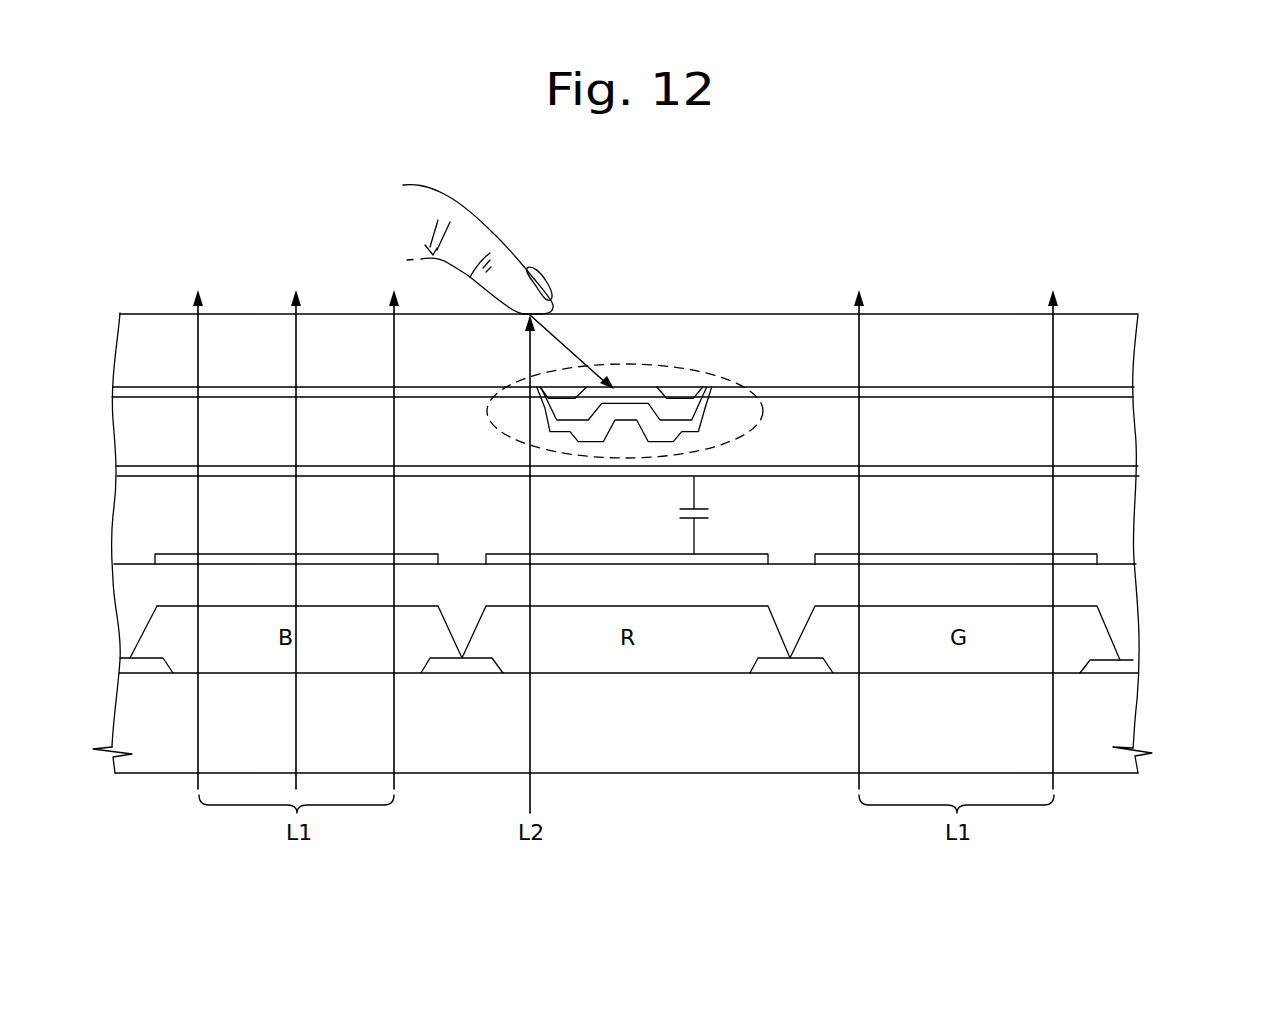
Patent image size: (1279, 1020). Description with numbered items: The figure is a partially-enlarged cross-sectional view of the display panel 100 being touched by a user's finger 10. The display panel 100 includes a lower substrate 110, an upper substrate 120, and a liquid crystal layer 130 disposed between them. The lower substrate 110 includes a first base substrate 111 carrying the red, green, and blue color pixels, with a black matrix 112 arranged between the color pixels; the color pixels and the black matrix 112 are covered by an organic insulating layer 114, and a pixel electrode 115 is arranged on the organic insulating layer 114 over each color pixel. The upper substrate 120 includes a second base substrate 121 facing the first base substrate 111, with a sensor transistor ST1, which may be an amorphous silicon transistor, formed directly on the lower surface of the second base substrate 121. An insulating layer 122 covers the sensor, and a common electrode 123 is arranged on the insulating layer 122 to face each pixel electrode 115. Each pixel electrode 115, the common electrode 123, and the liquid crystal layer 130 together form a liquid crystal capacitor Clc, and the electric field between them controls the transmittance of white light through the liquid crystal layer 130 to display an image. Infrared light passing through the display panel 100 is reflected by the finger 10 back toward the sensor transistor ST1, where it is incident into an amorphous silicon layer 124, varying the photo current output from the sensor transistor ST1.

The object 10 is at (513, 238).
The display panel 100 is at (1104, 250).
The lower substrate 110 is at (1207, 548).
The first base substrate 111 is at (1127, 714).
The black matrix 112 is at (1127, 670).
The organic insulating layer 114 is at (1127, 598).
The pixel electrode 115 is at (1088, 561).
The upper substrate 120 is at (1207, 350).
The second base substrate 121 is at (1127, 358).
The insulating layer 122 is at (1127, 432).
The common electrode 123 is at (1127, 472).
The amorphous silicon layer 124 is at (1127, 394).
The liquid crystal layer 130 is at (1097, 514).
The sensor transistor ST1 is at (667, 366).
The liquid crystal capacitor Clc is at (714, 515).